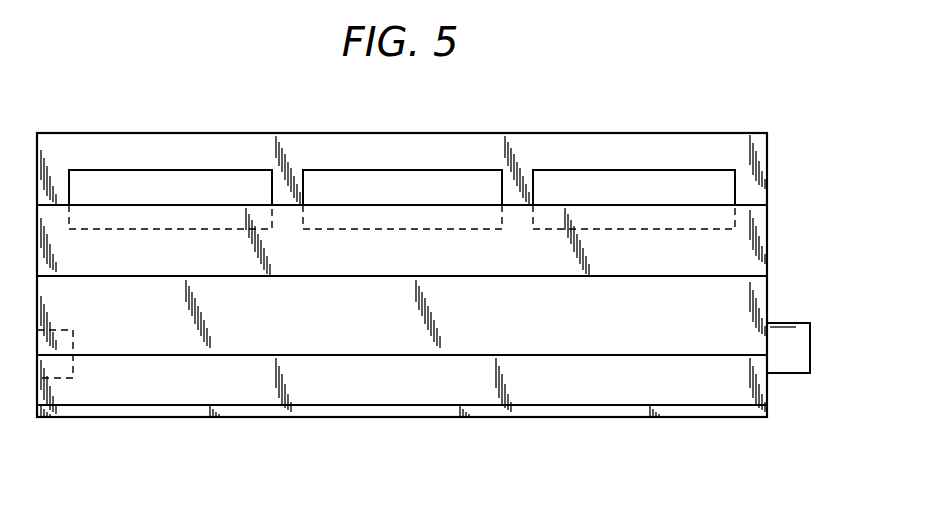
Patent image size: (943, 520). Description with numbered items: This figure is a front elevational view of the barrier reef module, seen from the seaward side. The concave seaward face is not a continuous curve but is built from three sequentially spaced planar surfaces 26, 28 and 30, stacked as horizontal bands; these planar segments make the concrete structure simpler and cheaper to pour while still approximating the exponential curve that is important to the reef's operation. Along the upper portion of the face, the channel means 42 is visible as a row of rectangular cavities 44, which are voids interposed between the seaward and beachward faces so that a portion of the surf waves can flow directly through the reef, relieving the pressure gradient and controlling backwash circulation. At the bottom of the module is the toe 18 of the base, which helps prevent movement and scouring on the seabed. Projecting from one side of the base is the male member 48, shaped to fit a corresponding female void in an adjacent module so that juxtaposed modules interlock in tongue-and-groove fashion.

The toe 18 is at (363, 388).
The planar surface 26 is at (699, 322).
The planar surface 28 is at (690, 260).
The planar surface 30 is at (712, 159).
The channel means 42 is at (328, 185).
The rectangular cavity 44 is at (162, 188).
The male member 48 is at (797, 340).